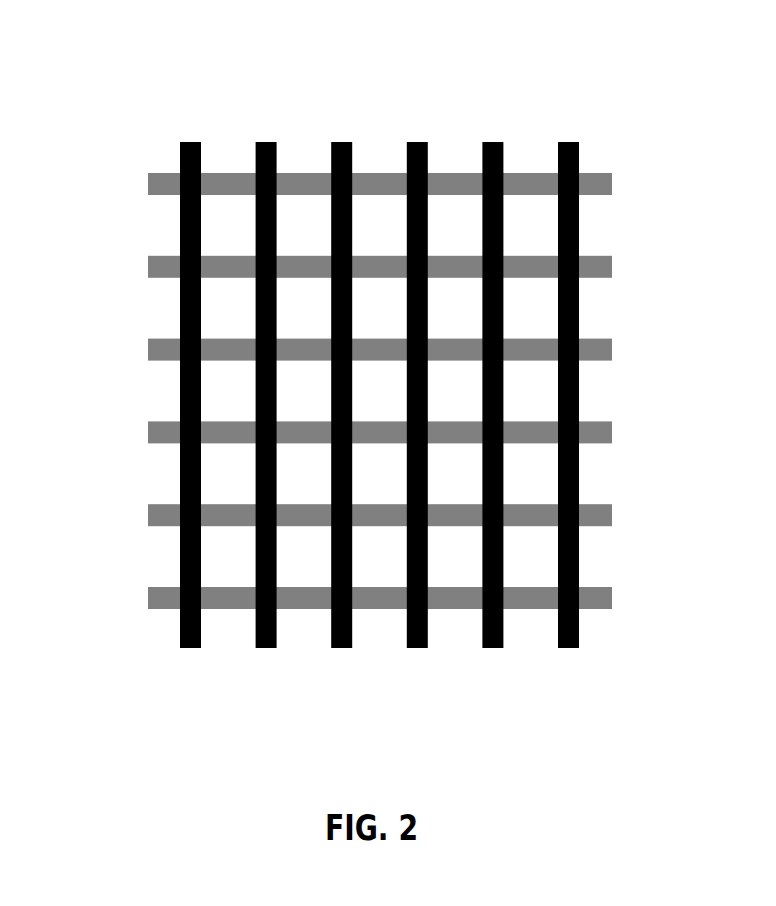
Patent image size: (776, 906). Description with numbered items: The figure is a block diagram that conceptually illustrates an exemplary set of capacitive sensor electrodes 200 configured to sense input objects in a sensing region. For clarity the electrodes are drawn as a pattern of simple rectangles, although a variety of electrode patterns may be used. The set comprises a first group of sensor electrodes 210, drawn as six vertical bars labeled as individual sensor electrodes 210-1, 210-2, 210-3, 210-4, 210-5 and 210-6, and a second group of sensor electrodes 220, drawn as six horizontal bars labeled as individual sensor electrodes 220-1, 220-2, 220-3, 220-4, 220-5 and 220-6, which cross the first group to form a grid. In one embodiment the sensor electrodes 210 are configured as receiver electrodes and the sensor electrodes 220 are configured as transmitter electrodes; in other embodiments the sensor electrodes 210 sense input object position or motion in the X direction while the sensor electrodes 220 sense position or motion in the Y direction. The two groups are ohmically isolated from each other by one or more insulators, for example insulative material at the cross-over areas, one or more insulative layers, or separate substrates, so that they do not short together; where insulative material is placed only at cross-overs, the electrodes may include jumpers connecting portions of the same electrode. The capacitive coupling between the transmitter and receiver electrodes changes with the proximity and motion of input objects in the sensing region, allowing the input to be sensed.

The set of capacitive sensor electrodes 200 is at (389, 398).
The sensor electrodes 210 is at (384, 398).
The sensor electrodes 220 is at (389, 383).
The sensor electrode 210-1 is at (190, 648).
The sensor electrode 210-2 is at (266, 648).
The sensor electrode 210-3 is at (342, 648).
The sensor electrode 210-4 is at (417, 648).
The sensor electrode 210-5 is at (493, 648).
The sensor electrode 210-6 is at (568, 648).
The sensor electrode 220-1 is at (148, 185).
The sensor electrode 220-2 is at (148, 268).
The sensor electrode 220-3 is at (148, 351).
The sensor electrode 220-4 is at (148, 433).
The sensor electrode 220-5 is at (148, 516).
The sensor electrode 220-6 is at (148, 599).